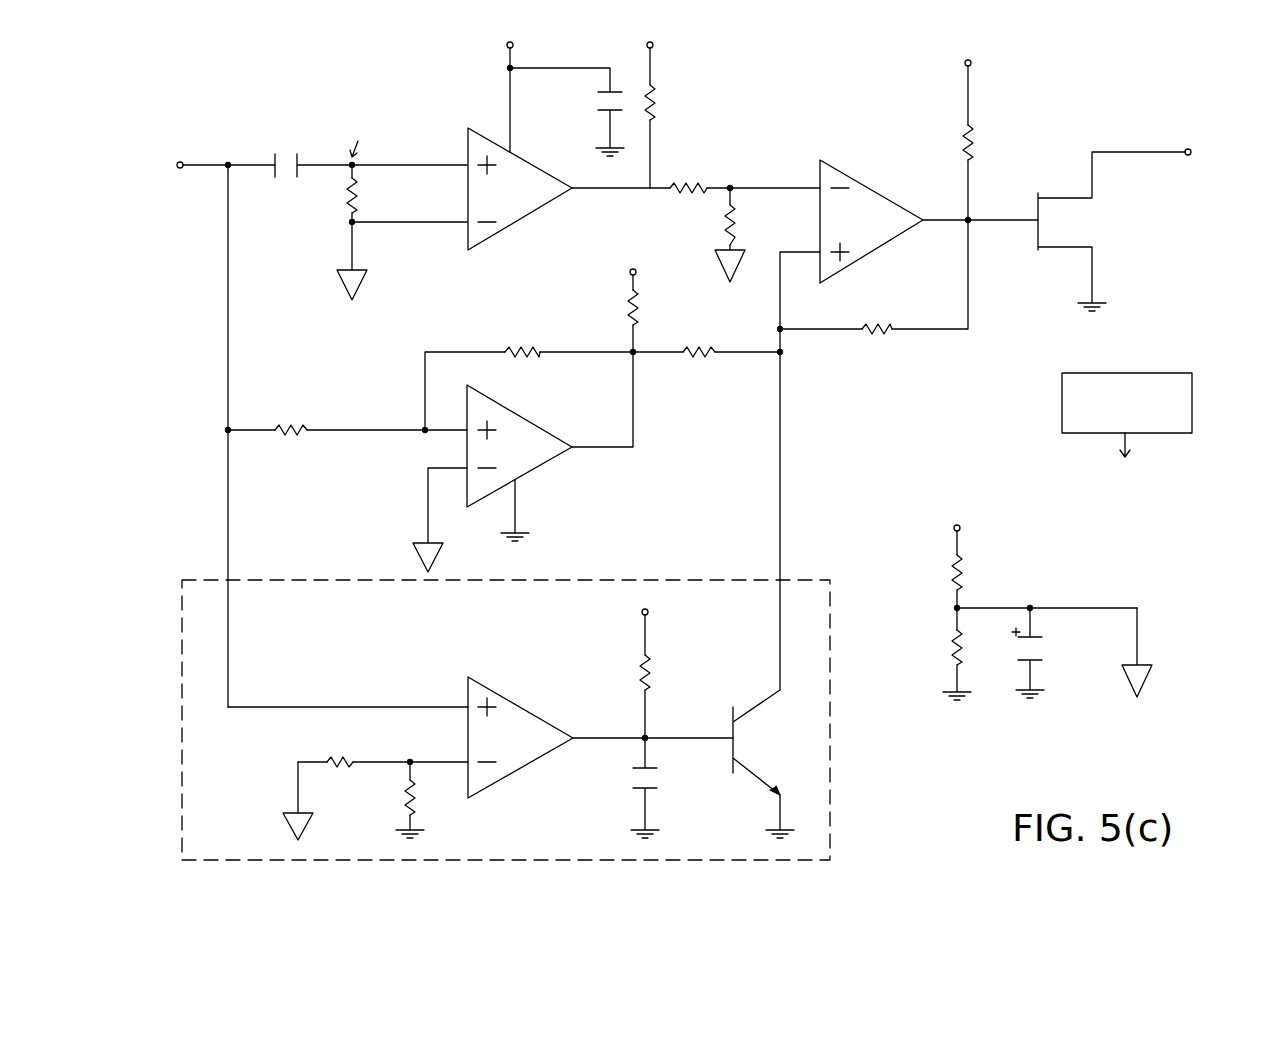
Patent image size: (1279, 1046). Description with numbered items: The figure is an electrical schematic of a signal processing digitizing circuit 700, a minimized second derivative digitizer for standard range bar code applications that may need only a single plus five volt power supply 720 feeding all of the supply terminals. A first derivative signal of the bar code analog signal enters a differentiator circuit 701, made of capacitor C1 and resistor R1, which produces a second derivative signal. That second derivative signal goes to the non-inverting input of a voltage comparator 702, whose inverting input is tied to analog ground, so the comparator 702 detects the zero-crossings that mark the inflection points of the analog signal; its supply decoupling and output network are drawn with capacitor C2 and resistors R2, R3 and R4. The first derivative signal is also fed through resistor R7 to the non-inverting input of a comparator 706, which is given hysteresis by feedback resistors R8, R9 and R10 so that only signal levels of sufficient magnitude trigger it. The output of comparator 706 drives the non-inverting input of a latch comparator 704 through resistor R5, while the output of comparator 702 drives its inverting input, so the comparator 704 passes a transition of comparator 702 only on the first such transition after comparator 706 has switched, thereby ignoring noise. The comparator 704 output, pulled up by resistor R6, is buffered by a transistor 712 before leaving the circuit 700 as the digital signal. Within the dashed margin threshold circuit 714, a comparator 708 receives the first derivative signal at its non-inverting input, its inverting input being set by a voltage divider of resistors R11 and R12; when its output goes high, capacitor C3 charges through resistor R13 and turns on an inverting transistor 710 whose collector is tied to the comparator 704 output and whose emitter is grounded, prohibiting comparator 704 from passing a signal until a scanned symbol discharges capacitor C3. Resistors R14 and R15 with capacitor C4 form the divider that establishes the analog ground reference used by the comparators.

The signal processing digitizing circuit 700 is at (693, 472).
The differentiator circuit 701 is at (366, 212).
The voltage comparator 702 is at (468, 152).
The comparator 704 is at (820, 175).
The comparator 706 is at (467, 398).
The comparator 708 is at (468, 691).
The transistor 710 is at (725, 718).
The transistor 712 is at (1038, 200).
The margin threshold circuit 714 is at (535, 862).
The power supply 720 is at (1092, 373).
The capacitor C1 is at (370, 151).
The capacitor C2 is at (567, 112).
The capacitor C3 is at (628, 788).
The capacitor C4 is at (1040, 653).
The resistor R1 is at (402, 232).
The resistor R2 is at (665, 106).
The resistor R3 is at (696, 178).
The resistor R4 is at (739, 235).
The resistor R5 is at (874, 277).
The resistor R6 is at (962, 131).
The resistor R7 is at (347, 420).
The resistor R8 is at (554, 377).
The resistor R9 is at (645, 301).
The resistor R10 is at (731, 340).
The resistor R11 is at (375, 788).
The resistor R12 is at (398, 800).
The resistor R13 is at (636, 663).
The resistor R14 is at (1023, 558).
The resistor R15 is at (940, 654).